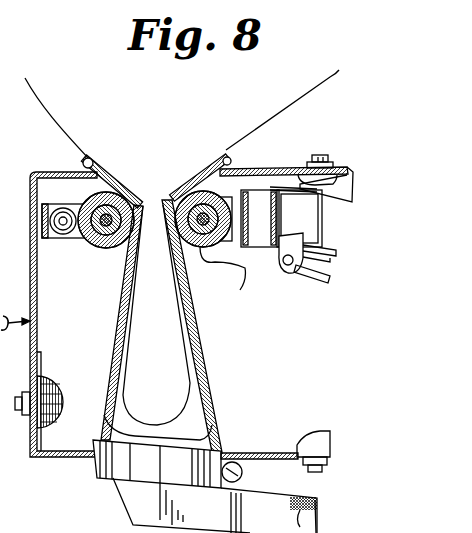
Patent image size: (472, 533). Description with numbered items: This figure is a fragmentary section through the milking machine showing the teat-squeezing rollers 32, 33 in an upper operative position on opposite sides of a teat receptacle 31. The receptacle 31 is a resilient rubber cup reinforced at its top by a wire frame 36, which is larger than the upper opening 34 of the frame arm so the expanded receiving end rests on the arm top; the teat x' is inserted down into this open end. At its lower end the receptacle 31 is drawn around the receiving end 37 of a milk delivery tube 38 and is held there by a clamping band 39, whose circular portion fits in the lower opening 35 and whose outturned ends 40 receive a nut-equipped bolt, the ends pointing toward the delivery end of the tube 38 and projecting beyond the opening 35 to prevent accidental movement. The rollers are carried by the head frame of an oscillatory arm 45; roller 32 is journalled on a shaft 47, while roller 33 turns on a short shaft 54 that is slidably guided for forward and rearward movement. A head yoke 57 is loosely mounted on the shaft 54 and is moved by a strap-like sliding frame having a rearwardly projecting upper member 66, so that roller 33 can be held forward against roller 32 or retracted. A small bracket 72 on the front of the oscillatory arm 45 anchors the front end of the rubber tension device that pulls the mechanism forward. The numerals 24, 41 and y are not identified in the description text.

The wire frame 36 is at (88, 158).
The shaft 47 is at (124, 196).
The short shaft 54 is at (192, 182).
The upper opening 34 is at (262, 167).
The upper member 66 is at (343, 170).
The bracket 72 is at (296, 239).
The oscillatory arm 45 is at (327, 250).
The rod 24 is at (317, 280).
The head yoke 57 is at (240, 250).
The teat-squeezing roller 33 is at (213, 247).
The teat-squeezing roller 32 is at (100, 249).
The teat receptacle 31 is at (198, 346).
The clamping band 39 is at (157, 464).
The receiving end 37 is at (133, 463).
The milk delivery tube 38 is at (302, 525).
The lower opening 35 is at (224, 452).
The outturned end 40 is at (257, 455).
The screw 41 is at (243, 473).
The teat x' is at (282, 108).
The cavity y is at (187, 377).